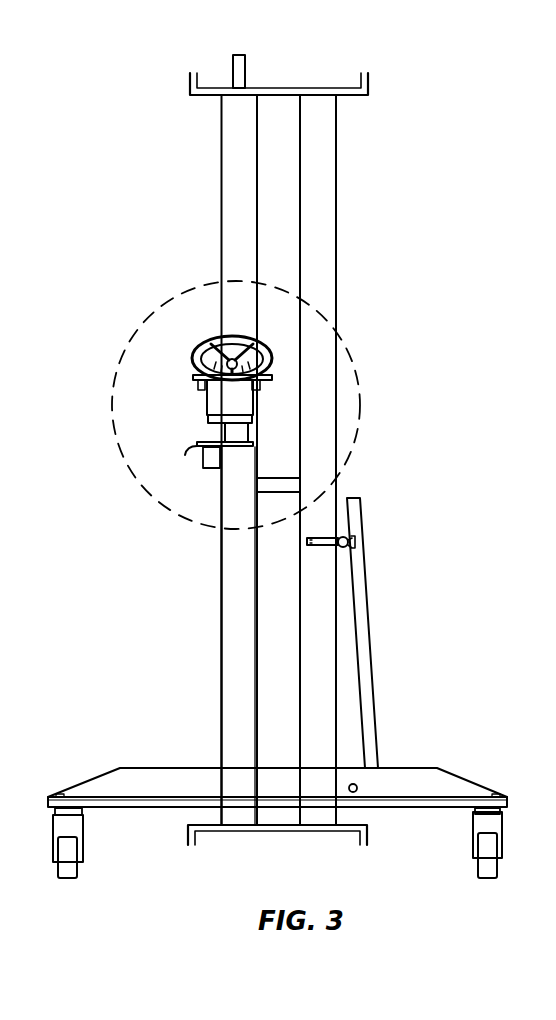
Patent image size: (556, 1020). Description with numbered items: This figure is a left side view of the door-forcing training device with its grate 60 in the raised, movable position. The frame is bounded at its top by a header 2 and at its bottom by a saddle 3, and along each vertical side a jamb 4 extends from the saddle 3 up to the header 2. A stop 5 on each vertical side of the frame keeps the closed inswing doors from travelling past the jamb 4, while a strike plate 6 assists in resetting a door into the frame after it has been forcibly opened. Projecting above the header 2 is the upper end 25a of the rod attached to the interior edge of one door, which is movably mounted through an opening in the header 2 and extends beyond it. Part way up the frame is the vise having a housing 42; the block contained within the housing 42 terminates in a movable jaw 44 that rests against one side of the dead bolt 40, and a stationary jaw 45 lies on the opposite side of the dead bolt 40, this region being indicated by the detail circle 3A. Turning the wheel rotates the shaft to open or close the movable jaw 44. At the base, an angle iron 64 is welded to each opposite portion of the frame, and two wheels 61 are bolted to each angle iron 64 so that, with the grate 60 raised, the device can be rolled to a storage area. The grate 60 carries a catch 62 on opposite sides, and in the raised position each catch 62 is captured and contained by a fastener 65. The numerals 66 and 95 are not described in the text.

The header 2 is at (348, 94).
The upper end of rod 25a is at (245, 60).
The saddle 3 is at (208, 832).
The detail circle 3A is at (135, 327).
The jamb 4 is at (237, 549).
The stop 5 is at (286, 229).
The strike plate 6 is at (232, 447).
The dead bolt 40 is at (232, 431).
The housing 42 is at (220, 398).
The movable jaw 44 is at (208, 417).
The stationary jaw 45 is at (240, 438).
The grate 60 is at (368, 667).
The wheels 61 is at (62, 868).
The catch 62 is at (356, 556).
The angle iron 64 is at (152, 780).
The fastener 65 is at (323, 547).
The element 66 is at (8, 331).
The block 95 is at (280, 478).